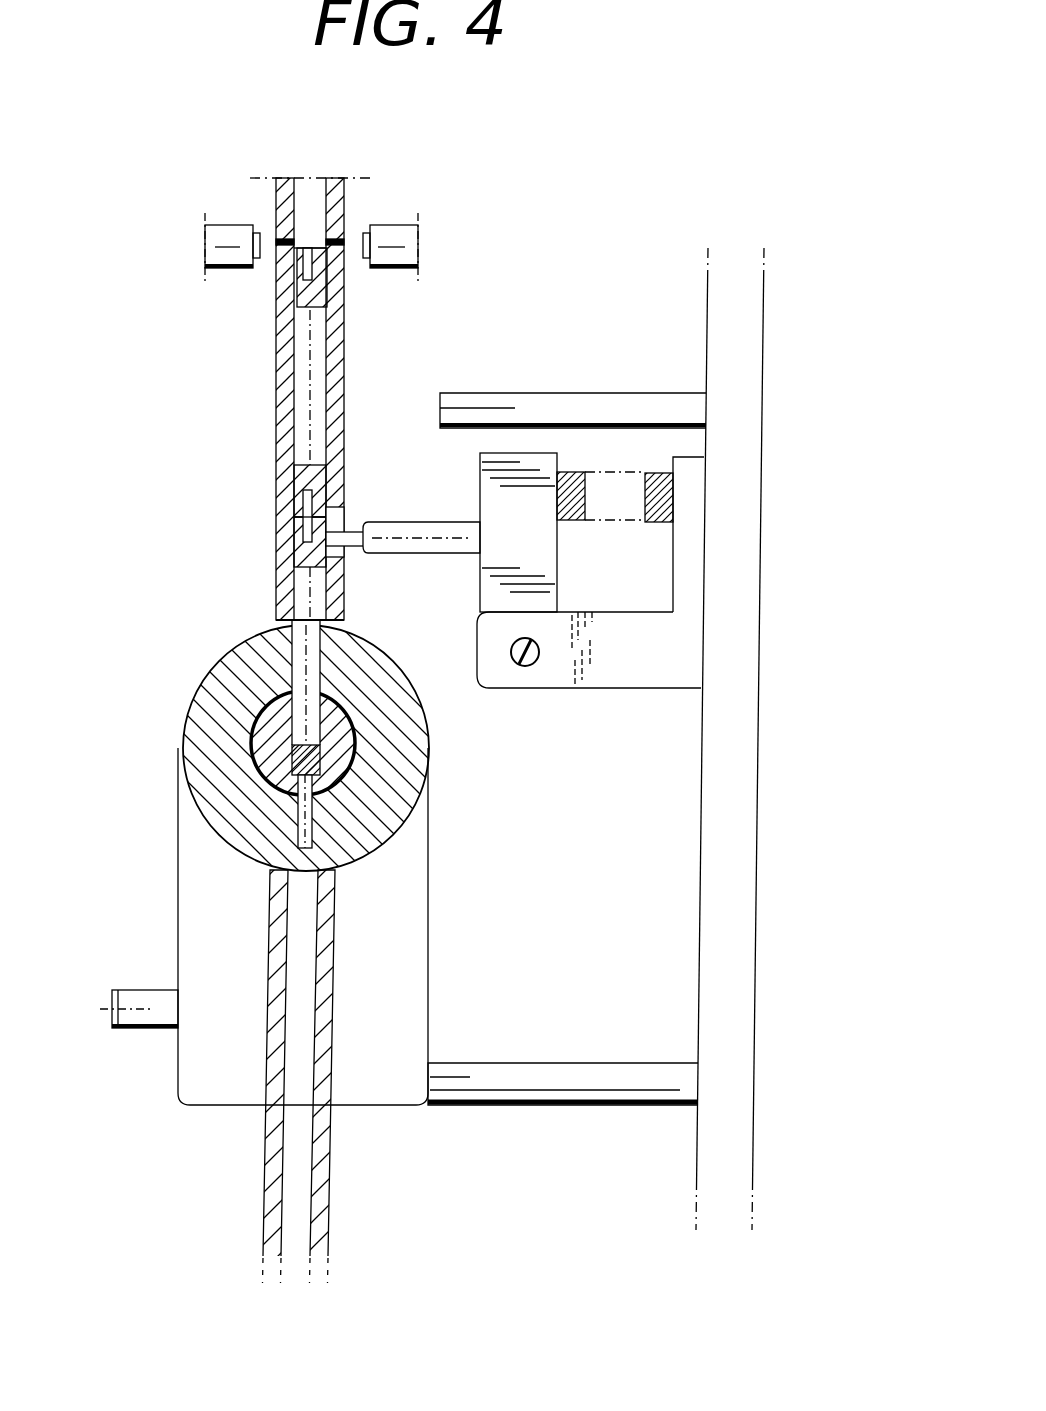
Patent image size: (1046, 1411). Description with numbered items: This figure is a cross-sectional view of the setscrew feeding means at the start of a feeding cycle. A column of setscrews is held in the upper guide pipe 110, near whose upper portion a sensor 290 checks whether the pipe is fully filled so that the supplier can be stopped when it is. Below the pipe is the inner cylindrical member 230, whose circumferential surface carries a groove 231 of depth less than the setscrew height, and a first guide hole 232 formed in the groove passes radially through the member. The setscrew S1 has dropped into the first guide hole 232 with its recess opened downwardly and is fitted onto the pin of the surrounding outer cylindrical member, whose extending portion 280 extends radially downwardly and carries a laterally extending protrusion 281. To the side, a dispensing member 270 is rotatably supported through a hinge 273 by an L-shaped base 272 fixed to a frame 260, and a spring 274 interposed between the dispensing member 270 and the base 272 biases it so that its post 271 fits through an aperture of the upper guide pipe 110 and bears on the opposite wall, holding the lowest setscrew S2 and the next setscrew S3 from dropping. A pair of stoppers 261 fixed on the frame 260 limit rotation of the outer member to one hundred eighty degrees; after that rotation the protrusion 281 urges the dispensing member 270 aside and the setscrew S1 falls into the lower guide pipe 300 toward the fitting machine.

The upper guide pipe 110 is at (285, 362).
The setscrew S1 is at (298, 778).
The lowest setscrew S2 is at (291, 532).
The next setscrew S3 is at (290, 473).
The inner cylindrical member 230 is at (250, 741).
The groove 231 is at (355, 752).
The first guide hole 232 is at (262, 672).
The frame 260 is at (702, 958).
The stoppers 261 is at (578, 393).
The dispensing member 270 is at (478, 465).
The post 271 is at (398, 520).
The L-shaped base 272 is at (637, 670).
The hinge 273 is at (516, 665).
The spring 274 is at (607, 488).
The extending portion 280 is at (196, 1105).
The protrusion 281 is at (112, 1010).
The sensor 290 is at (398, 228).
The lower guide pipe 300 is at (322, 1183).